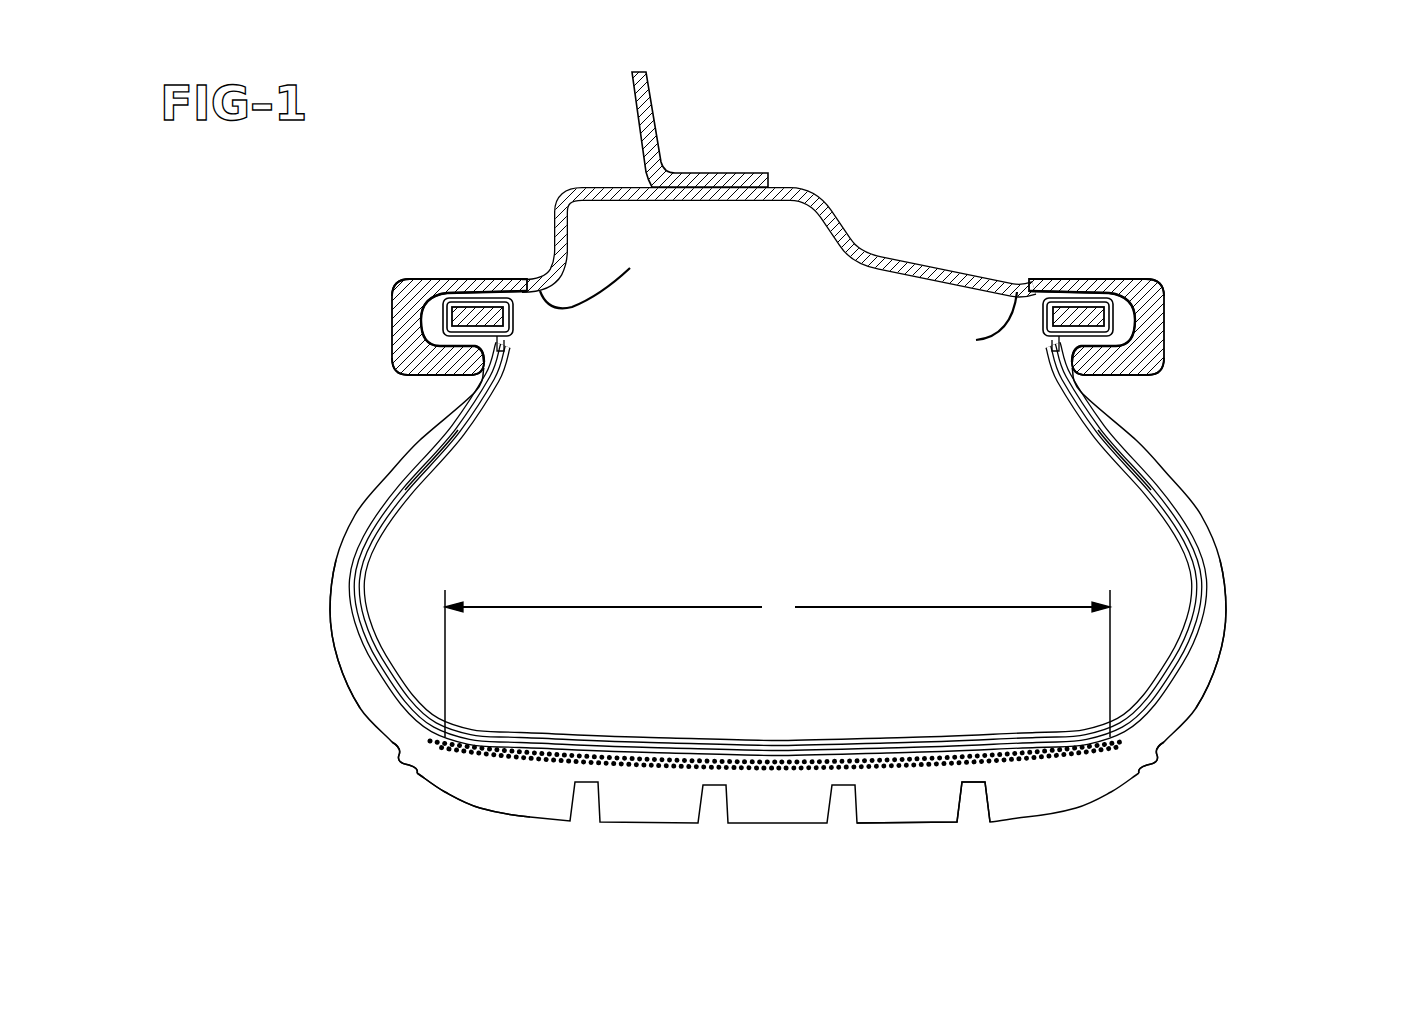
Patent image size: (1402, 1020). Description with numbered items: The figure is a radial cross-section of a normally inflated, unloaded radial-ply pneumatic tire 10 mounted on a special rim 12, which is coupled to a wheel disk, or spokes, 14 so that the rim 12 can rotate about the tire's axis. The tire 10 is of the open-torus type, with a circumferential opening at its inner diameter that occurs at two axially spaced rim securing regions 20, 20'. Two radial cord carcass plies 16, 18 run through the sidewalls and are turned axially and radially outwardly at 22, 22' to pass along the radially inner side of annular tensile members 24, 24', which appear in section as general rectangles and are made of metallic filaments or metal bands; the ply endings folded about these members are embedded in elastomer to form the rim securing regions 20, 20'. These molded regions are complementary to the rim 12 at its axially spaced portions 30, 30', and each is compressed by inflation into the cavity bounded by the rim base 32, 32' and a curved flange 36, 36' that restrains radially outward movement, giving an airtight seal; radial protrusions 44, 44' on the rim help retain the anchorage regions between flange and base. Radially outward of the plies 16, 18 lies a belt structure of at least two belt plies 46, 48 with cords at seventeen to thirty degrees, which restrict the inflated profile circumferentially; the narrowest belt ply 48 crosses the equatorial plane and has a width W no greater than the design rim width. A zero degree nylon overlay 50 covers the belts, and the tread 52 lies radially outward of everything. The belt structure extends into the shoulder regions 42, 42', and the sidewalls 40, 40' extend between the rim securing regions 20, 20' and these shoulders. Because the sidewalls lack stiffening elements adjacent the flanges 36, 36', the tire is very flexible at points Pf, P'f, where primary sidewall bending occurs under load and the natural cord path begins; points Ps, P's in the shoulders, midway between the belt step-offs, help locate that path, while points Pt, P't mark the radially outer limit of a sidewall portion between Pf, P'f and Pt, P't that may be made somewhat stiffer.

The radial-ply tire 10 is at (313, 807).
The special rim 12 is at (830, 220).
The wheel disk 14 is at (650, 137).
The carcass ply 16 is at (363, 560).
The carcass ply 18 is at (357, 617).
The rim securing region 20 is at (414, 327).
The rim securing region 20' is at (1141, 327).
The ply turn-up 22 is at (487, 274).
The ply turn-up 22' is at (1069, 274).
The annular tensile member 24 is at (463, 261).
The annular tensile member 24' is at (1096, 261).
The axially spaced rim portion 30 is at (395, 268).
The axially spaced rim portion 30' is at (1169, 268).
The rim base 32 is at (439, 242).
The rim base 32' is at (1119, 240).
The curved flange 36 is at (412, 397).
The curved flange 36' is at (1143, 397).
The sidewall 40 is at (374, 555).
The sidewall 40' is at (1187, 555).
The shoulder region 42 is at (354, 753).
The shoulder region 42' is at (1202, 753).
The radial protrusion 44 is at (603, 278).
The radial protrusion 44' is at (975, 322).
The belt ply 46 is at (817, 762).
The belt ply 48 is at (753, 763).
The zero degree nylon overlay 50 is at (880, 770).
The tread 52 is at (787, 810).
The belt ply width W is at (777, 663).
The sidewall flex point Pf is at (472, 409).
The sidewall flex point P'f is at (1077, 448).
The sidewall point Pt is at (367, 707).
The sidewall point P't is at (1237, 684).
The shoulder point Ps is at (400, 723).
The shoulder point P's is at (1177, 786).